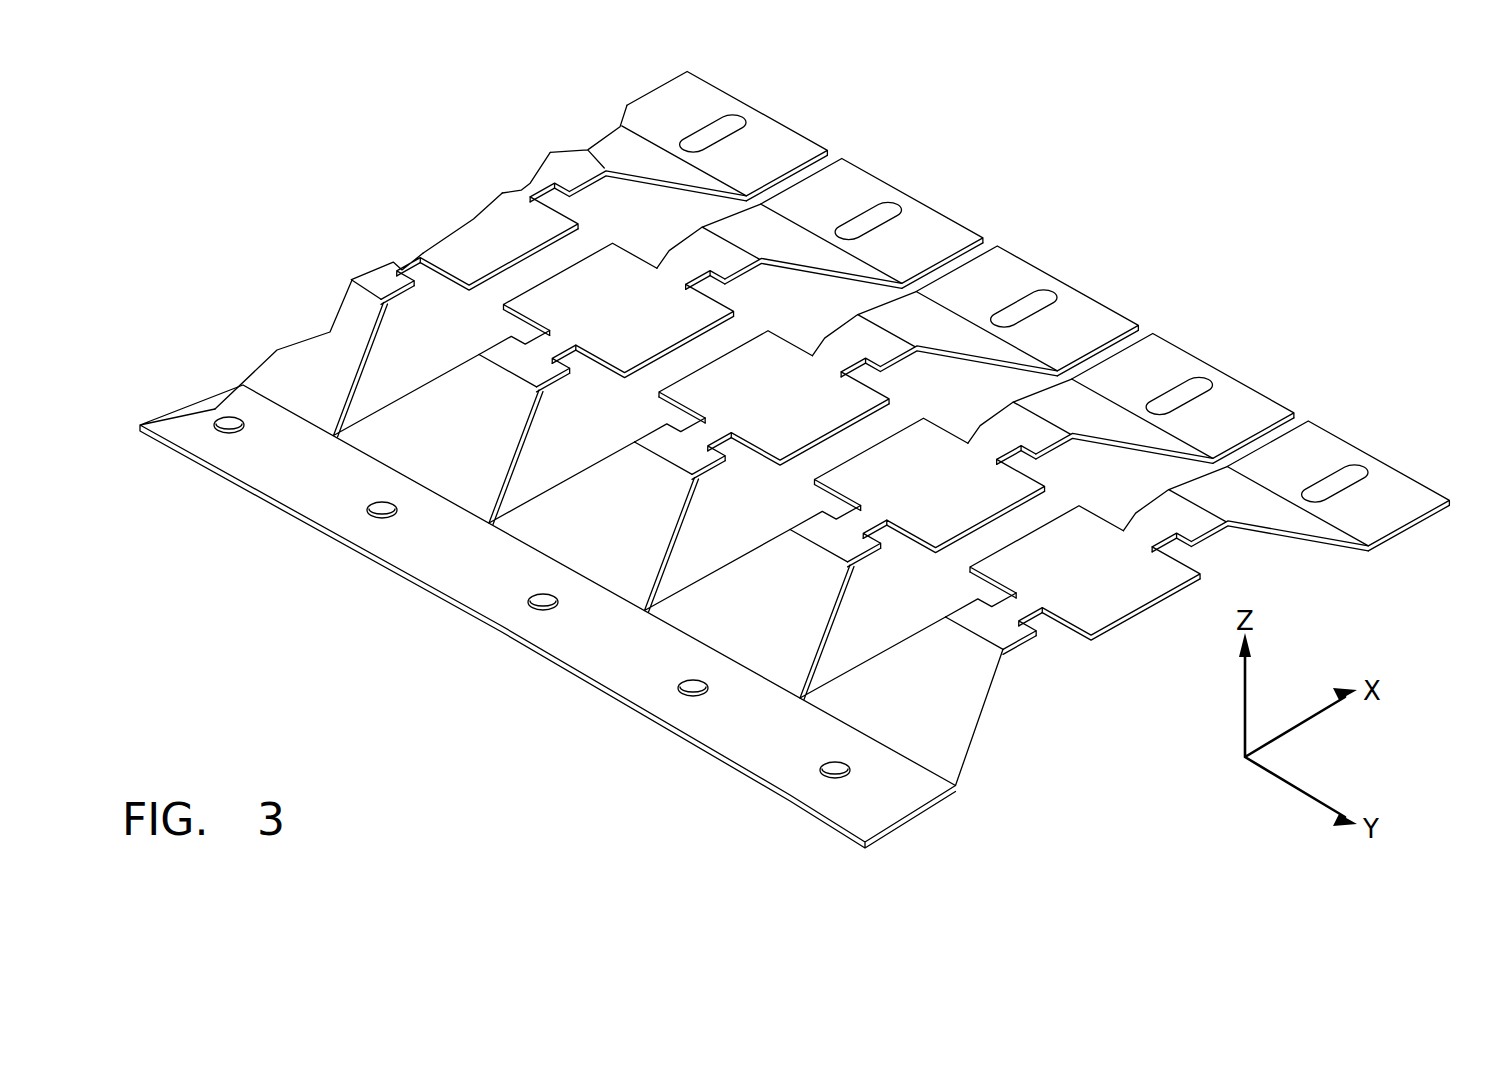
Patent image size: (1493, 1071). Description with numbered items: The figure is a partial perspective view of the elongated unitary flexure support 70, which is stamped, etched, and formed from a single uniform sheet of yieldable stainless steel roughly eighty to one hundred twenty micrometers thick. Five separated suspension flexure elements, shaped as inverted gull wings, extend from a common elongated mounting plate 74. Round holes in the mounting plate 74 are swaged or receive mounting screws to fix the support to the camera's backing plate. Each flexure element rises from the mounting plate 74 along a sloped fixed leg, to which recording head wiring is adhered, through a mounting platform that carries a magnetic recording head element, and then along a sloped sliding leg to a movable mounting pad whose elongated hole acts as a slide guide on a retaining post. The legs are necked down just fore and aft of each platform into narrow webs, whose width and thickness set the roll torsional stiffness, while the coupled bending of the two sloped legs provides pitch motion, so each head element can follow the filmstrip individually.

The unitary flexure support 70 is at (1134, 192).
The common elongated mounting plate 74 is at (890, 830).